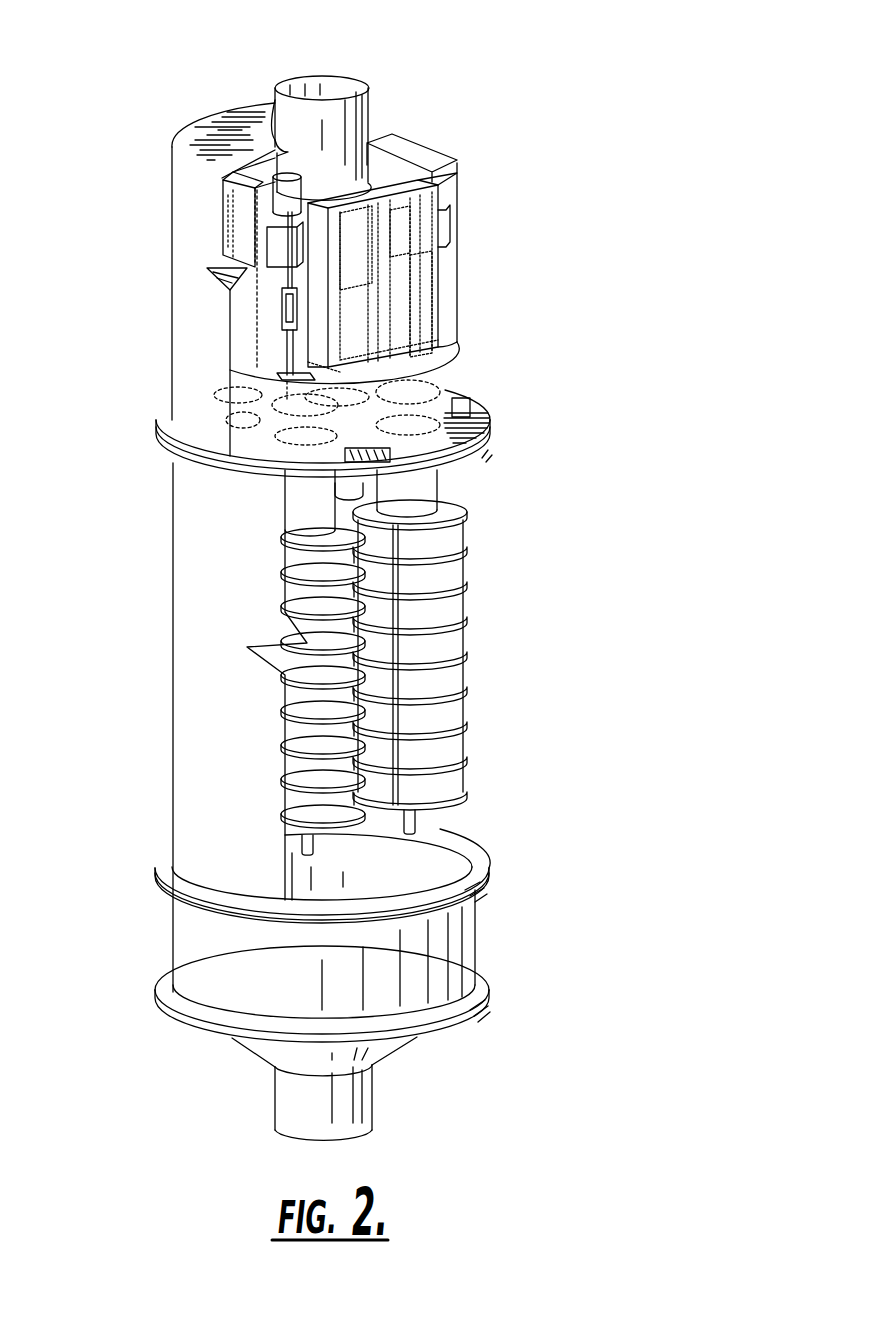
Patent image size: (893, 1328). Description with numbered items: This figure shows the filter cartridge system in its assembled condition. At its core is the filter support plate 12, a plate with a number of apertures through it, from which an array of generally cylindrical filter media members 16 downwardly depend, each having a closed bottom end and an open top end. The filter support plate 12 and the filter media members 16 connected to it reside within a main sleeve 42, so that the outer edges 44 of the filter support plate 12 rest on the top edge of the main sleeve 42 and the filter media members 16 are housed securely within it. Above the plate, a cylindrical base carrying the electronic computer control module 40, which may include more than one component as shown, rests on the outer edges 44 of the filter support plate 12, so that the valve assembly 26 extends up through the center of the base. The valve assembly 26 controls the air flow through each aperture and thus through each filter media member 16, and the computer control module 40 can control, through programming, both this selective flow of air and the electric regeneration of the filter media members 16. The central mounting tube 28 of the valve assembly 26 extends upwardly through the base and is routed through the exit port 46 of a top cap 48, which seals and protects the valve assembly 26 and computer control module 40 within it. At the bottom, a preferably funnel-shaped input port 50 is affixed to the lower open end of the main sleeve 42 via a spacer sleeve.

The filter support plate 12 is at (465, 462).
The filter media members 16 is at (460, 692).
The valve assembly 26 is at (282, 306).
The central mounting tube 28 is at (335, 133).
The computer control module 40 is at (452, 187).
The main sleeve 42 is at (198, 560).
The outer edges 44 is at (467, 455).
The exit port 46 is at (287, 152).
The top cap 48 is at (188, 212).
The input port 50 is at (355, 1097).